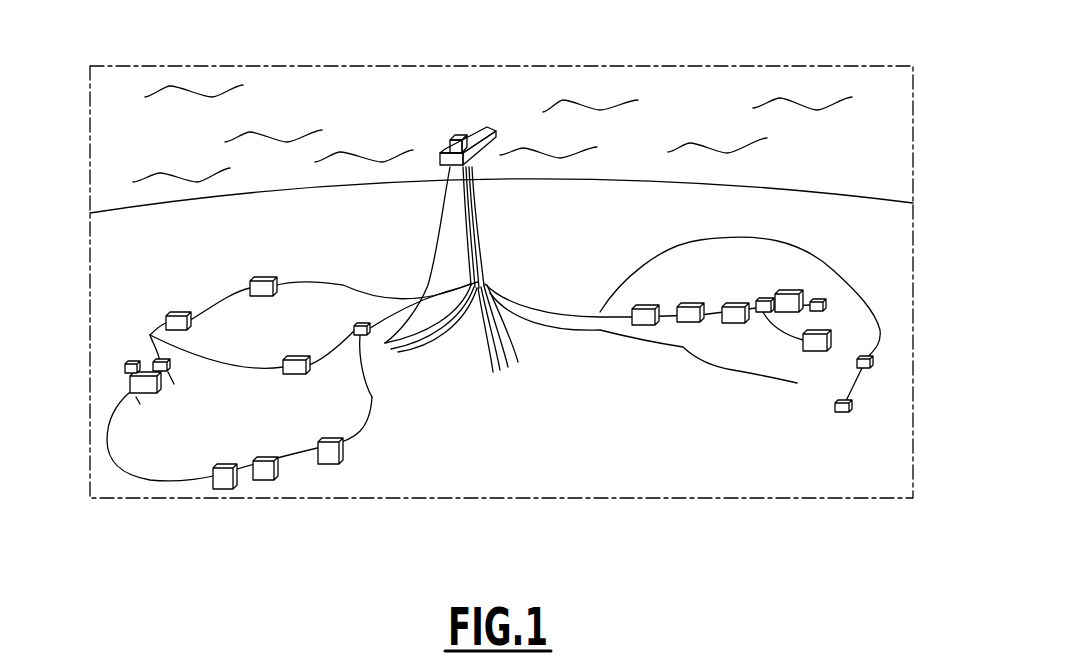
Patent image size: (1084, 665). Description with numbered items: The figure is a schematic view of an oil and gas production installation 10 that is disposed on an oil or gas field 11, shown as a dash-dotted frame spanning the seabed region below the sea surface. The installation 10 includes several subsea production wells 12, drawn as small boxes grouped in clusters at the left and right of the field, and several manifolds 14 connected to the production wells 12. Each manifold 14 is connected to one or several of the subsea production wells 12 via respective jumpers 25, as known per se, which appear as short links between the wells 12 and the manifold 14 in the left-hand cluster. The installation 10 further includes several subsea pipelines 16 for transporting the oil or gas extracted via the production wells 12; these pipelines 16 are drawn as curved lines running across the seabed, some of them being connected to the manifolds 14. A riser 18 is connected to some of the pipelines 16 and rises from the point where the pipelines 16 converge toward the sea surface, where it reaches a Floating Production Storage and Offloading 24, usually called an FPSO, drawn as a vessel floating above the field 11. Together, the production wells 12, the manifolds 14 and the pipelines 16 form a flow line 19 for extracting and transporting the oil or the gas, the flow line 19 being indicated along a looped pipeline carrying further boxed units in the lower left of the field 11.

The oil and gas production installation 10 is at (694, 447).
The oil or gas field 11 is at (515, 452).
The subsea production well 12 is at (833, 285).
The manifold 14 is at (778, 285).
The subsea pipeline 16 is at (343, 283).
The riser 18 is at (484, 194).
The flow line 19 is at (302, 462).
The Floating Production Storage and Offloading 24 is at (445, 132).
The jumper 25 is at (136, 397).